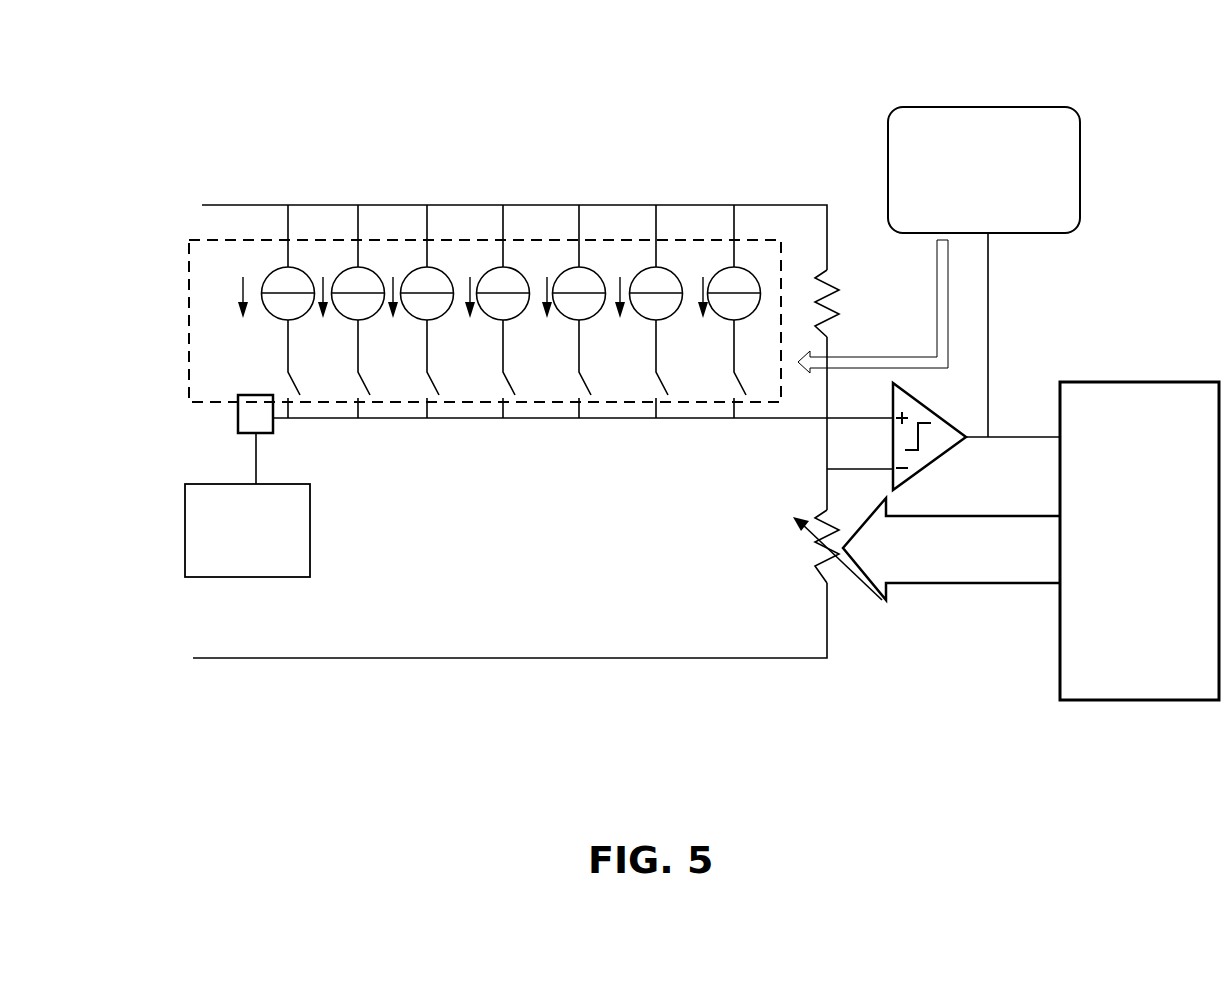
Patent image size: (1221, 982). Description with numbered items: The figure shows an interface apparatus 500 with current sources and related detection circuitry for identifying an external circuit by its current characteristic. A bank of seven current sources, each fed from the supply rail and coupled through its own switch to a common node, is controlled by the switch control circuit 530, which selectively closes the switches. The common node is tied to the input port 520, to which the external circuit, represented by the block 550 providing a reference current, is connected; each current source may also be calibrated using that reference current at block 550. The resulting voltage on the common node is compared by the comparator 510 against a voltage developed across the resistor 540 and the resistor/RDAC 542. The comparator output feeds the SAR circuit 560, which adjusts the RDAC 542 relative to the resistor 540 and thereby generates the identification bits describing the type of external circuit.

The interface apparatus 500 is at (1118, 68).
The comparator 510 is at (916, 397).
The input port 520 is at (256, 395).
The switch control circuit 530 is at (1046, 107).
The resistor 540 is at (830, 270).
The resistor/RDAC 542 is at (832, 510).
The reference current block 550 is at (280, 484).
The SAR circuit 560 is at (1098, 382).